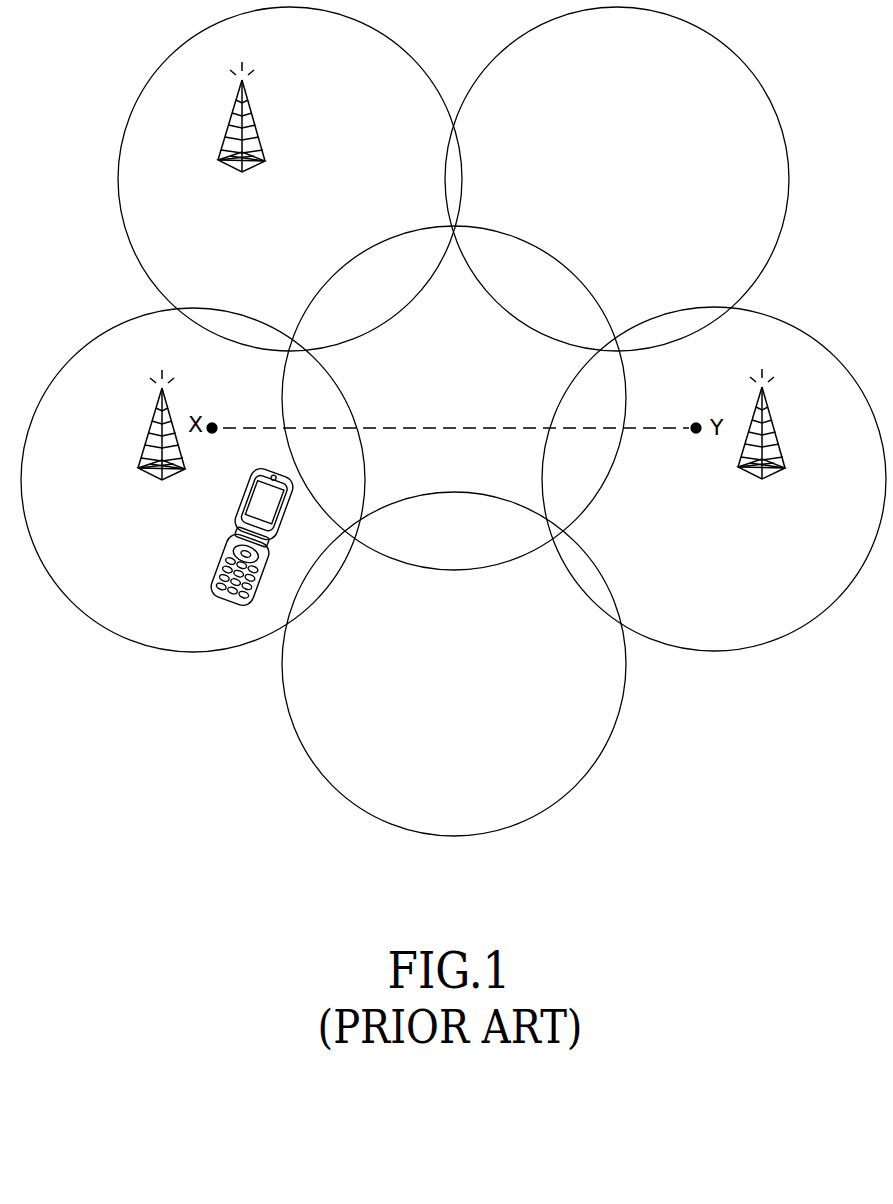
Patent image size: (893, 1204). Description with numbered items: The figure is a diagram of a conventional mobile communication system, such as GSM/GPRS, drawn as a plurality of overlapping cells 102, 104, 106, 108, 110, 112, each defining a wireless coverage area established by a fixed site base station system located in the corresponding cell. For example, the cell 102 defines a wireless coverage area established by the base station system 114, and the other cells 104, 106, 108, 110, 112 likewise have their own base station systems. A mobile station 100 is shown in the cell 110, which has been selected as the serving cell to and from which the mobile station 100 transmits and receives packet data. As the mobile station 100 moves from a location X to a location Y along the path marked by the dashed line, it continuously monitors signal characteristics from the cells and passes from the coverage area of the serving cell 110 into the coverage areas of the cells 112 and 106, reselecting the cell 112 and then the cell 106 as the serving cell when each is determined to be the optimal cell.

The mobile station 100 is at (209, 558).
The cell 102 is at (287, 266).
The cell 104 is at (672, 262).
The cell 106 is at (745, 586).
The cell 108 is at (461, 741).
The cell 110 is at (126, 521).
The cell 112 is at (470, 472).
The base station system 114 is at (259, 130).